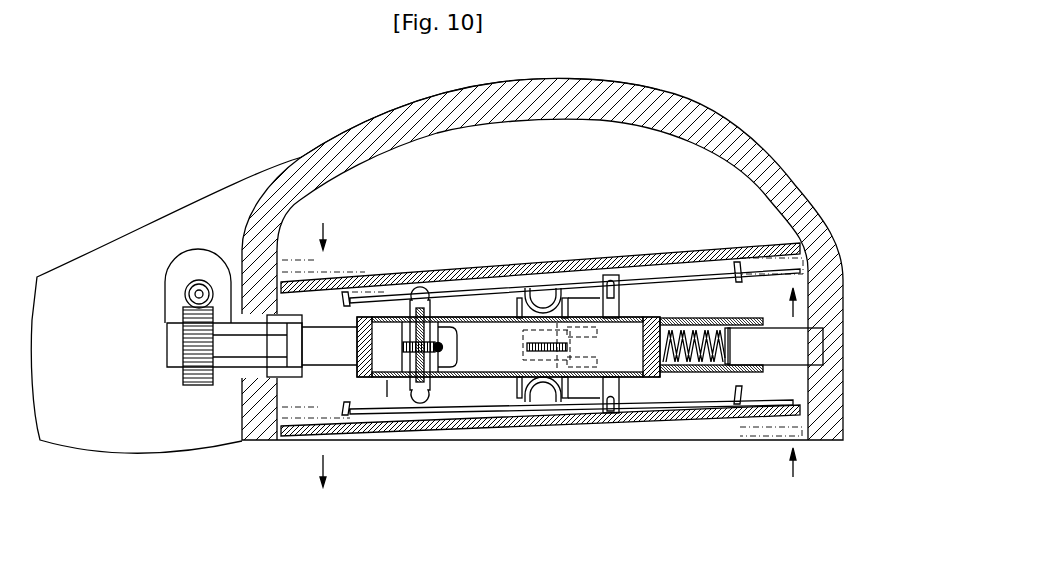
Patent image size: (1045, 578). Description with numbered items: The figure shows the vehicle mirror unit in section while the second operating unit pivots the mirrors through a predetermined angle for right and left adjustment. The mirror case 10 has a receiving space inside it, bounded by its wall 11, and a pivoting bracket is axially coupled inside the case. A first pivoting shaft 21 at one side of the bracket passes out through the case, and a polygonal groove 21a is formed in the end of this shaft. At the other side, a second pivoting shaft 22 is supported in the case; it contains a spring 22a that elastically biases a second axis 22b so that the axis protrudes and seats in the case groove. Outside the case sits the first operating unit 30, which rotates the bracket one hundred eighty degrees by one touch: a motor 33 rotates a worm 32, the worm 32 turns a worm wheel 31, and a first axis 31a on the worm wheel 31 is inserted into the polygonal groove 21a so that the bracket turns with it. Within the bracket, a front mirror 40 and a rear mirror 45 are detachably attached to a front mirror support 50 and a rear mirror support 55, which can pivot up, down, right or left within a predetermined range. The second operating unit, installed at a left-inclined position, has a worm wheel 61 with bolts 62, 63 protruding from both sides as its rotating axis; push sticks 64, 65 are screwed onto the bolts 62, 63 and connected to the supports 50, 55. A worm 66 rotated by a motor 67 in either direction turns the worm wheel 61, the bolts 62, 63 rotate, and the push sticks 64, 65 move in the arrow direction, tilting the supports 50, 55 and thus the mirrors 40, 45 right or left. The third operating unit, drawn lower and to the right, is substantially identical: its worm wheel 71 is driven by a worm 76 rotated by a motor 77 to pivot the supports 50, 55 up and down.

The mirror case 10 is at (717, 123).
The housing cover wall 11 is at (459, 148).
The first pivoting shaft 21 is at (327, 352).
The polygonal groove 21a is at (269, 441).
The second pivoting shaft 22 is at (707, 487).
The spring 22a is at (720, 366).
The second axis 22b is at (770, 353).
The first operating unit 30 is at (72, 200).
The worm wheel 31 is at (190, 350).
The first axis 31a is at (230, 352).
The worm 32 is at (195, 286).
The motor 33 is at (200, 263).
The front mirror 40 is at (680, 419).
The rear mirror 45 is at (668, 252).
The front mirror support 50 is at (653, 405).
The rear mirror support 55 is at (702, 270).
The worm wheel 61 is at (378, 316).
The bolt 62 is at (390, 378).
The bolt 63 is at (412, 290).
The push stick 64 is at (423, 380).
The push stick 65 is at (426, 340).
The worm 66 is at (445, 345).
The motor 67 is at (457, 360).
The worm wheel 71 is at (538, 402).
The worm 76 is at (588, 362).
The motor 77 is at (603, 378).